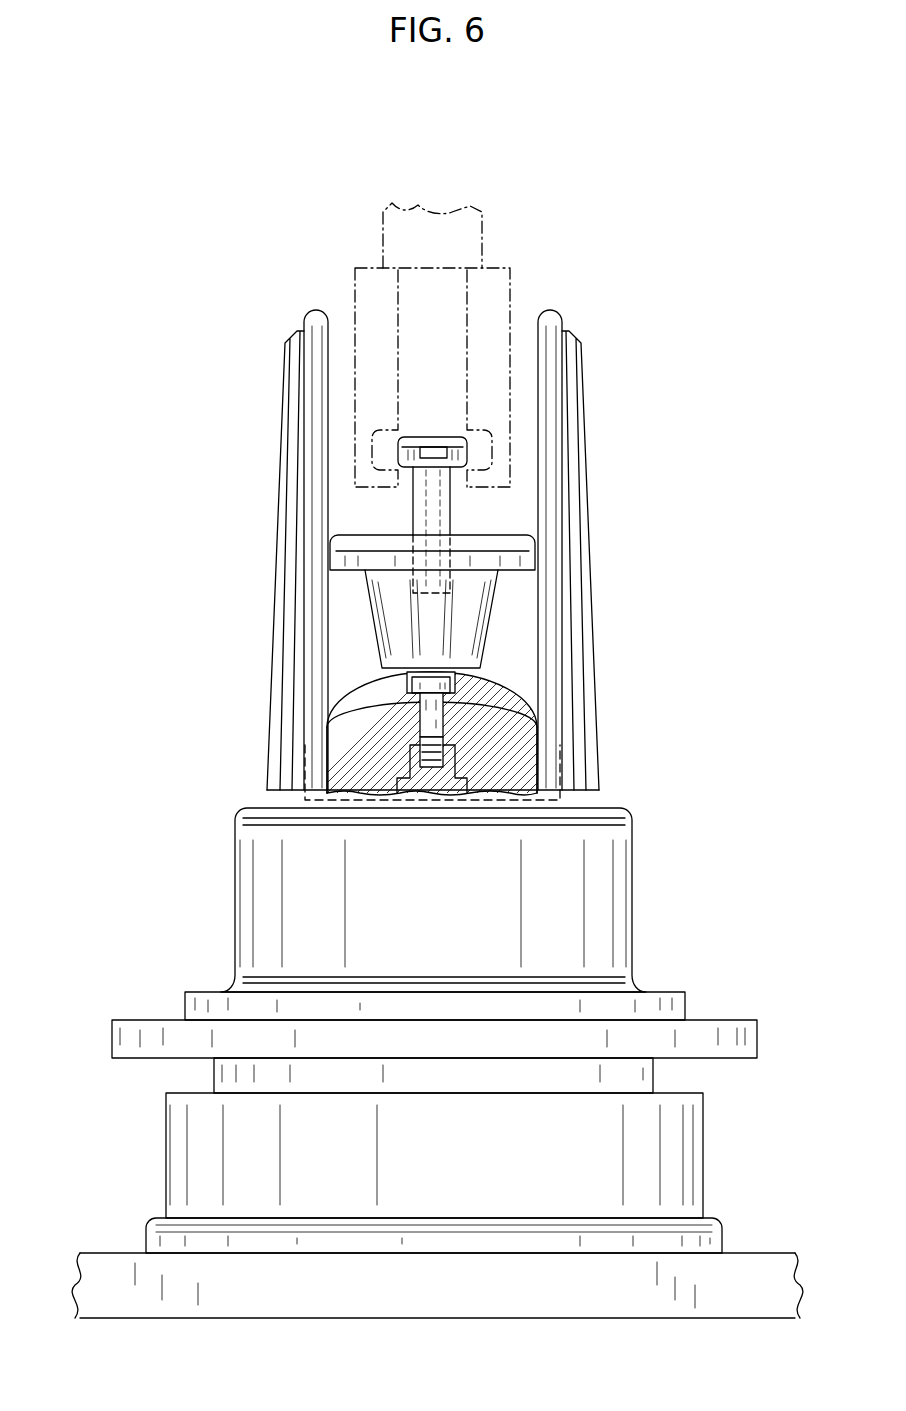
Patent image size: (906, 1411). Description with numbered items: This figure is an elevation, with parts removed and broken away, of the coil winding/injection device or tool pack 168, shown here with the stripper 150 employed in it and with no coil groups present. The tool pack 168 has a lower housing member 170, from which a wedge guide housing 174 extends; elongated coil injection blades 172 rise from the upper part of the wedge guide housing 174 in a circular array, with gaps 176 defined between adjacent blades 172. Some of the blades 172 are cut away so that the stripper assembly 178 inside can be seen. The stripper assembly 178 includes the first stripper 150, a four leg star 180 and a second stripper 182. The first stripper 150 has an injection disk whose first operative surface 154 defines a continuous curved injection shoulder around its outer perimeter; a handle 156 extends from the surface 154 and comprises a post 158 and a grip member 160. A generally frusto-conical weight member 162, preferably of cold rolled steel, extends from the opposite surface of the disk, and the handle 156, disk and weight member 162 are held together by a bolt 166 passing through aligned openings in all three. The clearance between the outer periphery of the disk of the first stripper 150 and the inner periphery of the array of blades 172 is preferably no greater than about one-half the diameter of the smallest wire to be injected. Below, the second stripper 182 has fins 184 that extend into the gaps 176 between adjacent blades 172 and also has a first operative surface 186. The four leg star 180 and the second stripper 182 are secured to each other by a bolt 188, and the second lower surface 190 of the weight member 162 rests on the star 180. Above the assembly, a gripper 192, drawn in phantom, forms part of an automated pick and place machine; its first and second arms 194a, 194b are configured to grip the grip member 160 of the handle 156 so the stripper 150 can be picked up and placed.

The stripper 150 is at (525, 554).
The first operative surface 154 is at (358, 535).
The handle 156 is at (465, 515).
The post 158 is at (413, 513).
The grip member 160 is at (467, 452).
The weight member 162 is at (515, 606).
The bolt 166 is at (439, 445).
The tool pack 168 is at (590, 476).
The lower housing member 170 is at (420, 929).
The blades 172 is at (293, 332).
The wedge guide housing 174 is at (607, 810).
The gaps 176 is at (300, 395).
The stripper assembly 178 is at (516, 651).
The four leg star 180 is at (510, 706).
The second stripper 182 is at (512, 730).
The fins 184 is at (322, 763).
The first operative surface 186 is at (340, 716).
The bolt 188 is at (443, 718).
The second lower surface 190 is at (400, 686).
The gripper 192 is at (458, 257).
The first arm 194a is at (437, 306).
The second arm 194b is at (517, 317).